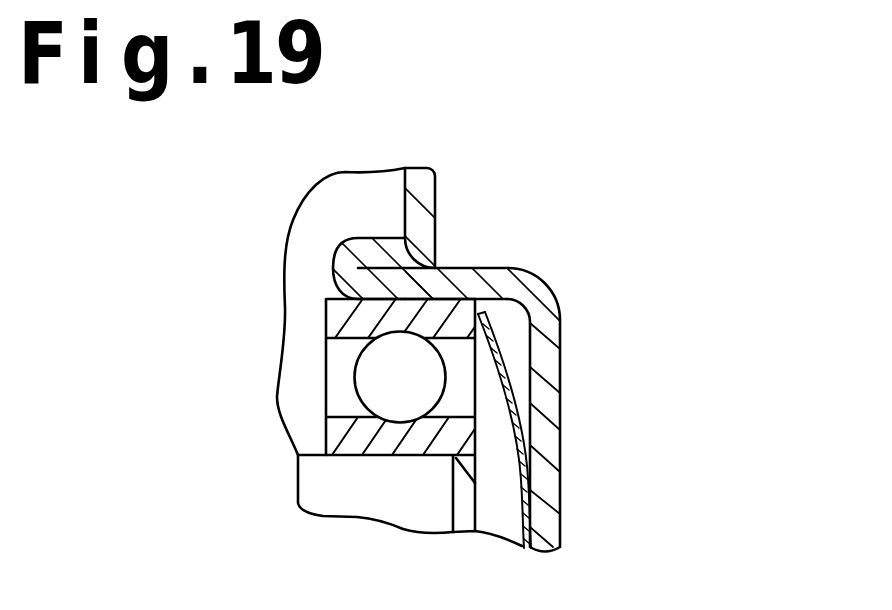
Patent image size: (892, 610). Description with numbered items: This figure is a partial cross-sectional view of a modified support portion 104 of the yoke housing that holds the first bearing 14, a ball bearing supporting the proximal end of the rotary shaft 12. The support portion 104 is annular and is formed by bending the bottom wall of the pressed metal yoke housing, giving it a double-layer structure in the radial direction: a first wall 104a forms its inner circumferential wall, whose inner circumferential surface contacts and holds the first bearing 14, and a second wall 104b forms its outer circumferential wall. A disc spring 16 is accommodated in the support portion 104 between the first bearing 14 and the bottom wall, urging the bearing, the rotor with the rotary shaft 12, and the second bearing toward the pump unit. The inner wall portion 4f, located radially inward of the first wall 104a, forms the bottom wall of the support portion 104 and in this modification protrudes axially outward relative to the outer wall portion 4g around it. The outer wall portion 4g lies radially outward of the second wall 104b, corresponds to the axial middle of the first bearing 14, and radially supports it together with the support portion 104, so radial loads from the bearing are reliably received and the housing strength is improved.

The rotary shaft 12 is at (312, 484).
The outer wall portion 4g is at (422, 183).
The support portion 104 is at (528, 350).
The first wall 104a is at (479, 279).
The second wall 104b is at (374, 243).
The inner wall portion 4f is at (555, 519).
The first bearing 14 is at (477, 357).
The disc spring 16 is at (503, 405).